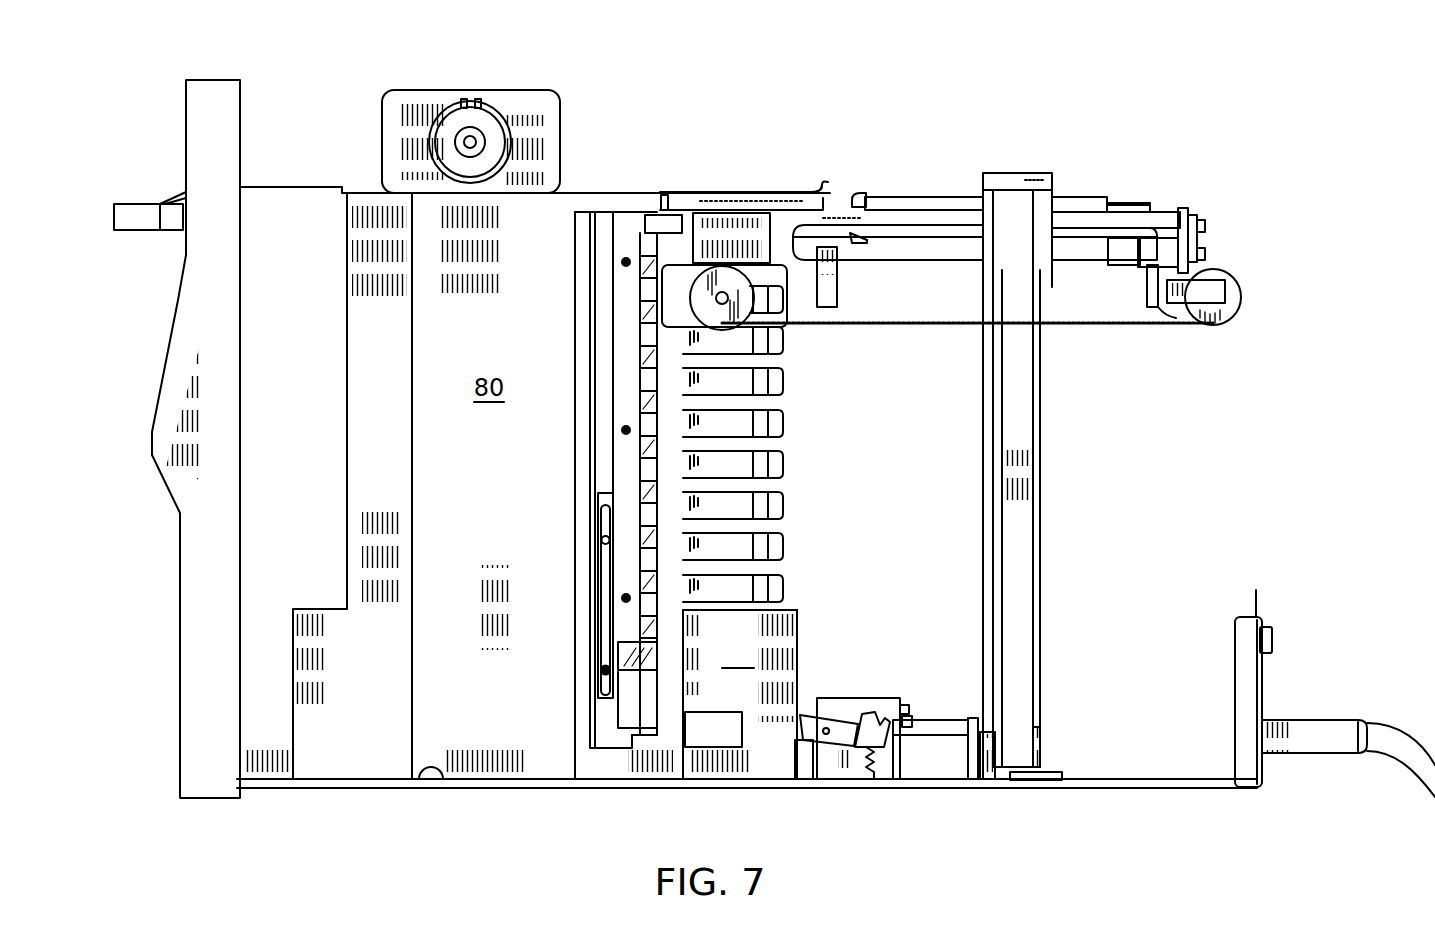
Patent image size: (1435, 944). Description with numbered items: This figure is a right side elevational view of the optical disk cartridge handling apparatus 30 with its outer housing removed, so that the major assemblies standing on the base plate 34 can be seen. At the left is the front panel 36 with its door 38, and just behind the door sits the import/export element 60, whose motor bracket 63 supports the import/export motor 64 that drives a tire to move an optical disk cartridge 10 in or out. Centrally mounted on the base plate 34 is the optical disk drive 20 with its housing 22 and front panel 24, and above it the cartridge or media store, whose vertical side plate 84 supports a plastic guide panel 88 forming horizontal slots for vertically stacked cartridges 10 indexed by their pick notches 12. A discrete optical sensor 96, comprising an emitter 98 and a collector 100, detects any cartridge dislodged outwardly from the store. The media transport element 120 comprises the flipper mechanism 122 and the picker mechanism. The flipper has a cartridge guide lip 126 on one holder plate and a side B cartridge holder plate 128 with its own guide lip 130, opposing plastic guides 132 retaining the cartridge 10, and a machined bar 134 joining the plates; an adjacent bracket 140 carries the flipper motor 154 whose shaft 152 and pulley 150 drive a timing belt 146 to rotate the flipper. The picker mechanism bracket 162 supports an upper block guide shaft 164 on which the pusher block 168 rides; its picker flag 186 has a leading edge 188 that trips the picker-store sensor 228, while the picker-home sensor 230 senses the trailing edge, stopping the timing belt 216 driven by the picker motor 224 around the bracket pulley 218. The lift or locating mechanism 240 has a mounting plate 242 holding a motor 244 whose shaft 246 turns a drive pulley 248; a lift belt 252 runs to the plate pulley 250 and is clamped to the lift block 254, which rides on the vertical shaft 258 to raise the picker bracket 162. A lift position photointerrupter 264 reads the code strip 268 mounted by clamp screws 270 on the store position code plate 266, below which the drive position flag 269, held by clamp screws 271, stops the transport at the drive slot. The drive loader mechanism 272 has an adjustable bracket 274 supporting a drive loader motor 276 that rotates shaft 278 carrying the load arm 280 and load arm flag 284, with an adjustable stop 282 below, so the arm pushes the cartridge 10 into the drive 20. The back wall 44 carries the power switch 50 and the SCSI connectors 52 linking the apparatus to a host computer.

The optical disk cartridge 10 is at (118, 216).
The pick notch 12 is at (765, 548).
The optical disk drive 20 is at (740, 694).
The housing 22 is at (800, 612).
The front panel 24 is at (798, 640).
The optical disk cartridge handling apparatus 30 is at (150, 90).
The base plate 34 is at (435, 786).
The front panel 36 is at (190, 548).
The door 38 is at (182, 193).
The back wall 44 is at (1262, 680).
The power switch 50 is at (1272, 632).
The SCSI plug and connectors 52 is at (1307, 728).
The import/export element 60 is at (292, 190).
The motor bracket 63 is at (530, 105).
The import/export motor 64 is at (478, 124).
The vertical side plate 84 is at (550, 235).
The plastic guide panel 88 is at (642, 752).
The discrete optical sensor 96 is at (820, 185).
The emitter 98 is at (806, 777).
The receiver or collector 100 is at (817, 188).
The media transport element 120 is at (1030, 118).
The flipper mechanism 122 is at (1118, 203).
The cartridge guide lip 126 is at (862, 193).
The side "B" cartridge holder plate 128 is at (930, 240).
The cartridge guide lip 130 is at (852, 232).
The plastic guides 132 is at (1080, 197).
The machined bar 134 is at (1148, 204).
The bracket 140 is at (1186, 212).
The timing belt 146 is at (1198, 218).
The pulley 150 is at (1205, 258).
The shaft 152 is at (1205, 248).
The flipper motor 154 is at (1122, 252).
The picker mechanism bracket 162 is at (705, 225).
The upper block guide shaft 164 is at (937, 225).
The pusher block 168 is at (1133, 283).
The picker flag 186 is at (1145, 305).
The leading or forward edge 188 is at (1150, 300).
The timing belt 216 is at (880, 326).
The bracket pulley 218 is at (1243, 298).
The picker motor 224 is at (740, 300).
The picker-store photointerrupter or optical sensor 228 is at (838, 296).
The picker-home photointerrupter or optical sensor 230 is at (1167, 320).
The lift or locating mechanism 240 is at (1030, 495).
The mounting plate 242 is at (988, 420).
The motor 244 is at (935, 756).
The rotatable shaft 246 is at (996, 745).
The drive pulley 248 is at (1038, 740).
The plate pulley 250 is at (988, 190).
The lift belt 252 is at (1003, 500).
The lift block or bracket 254 is at (1040, 186).
The vertical shaft 258 is at (1040, 630).
The lift position opto or photointerrupter 264 is at (665, 195).
The store position code plate or bracket 266 is at (605, 330).
The lift position photographic process code strip 268 is at (640, 662).
The drive position flag 269 is at (643, 735).
The clamp screws 270 is at (612, 434).
The clamp screws 271 is at (604, 560).
The drive loader mechanism 272 is at (888, 698).
The adjustable bracket 274 is at (905, 704).
The drive loader motor 276 is at (797, 748).
The shaft 278 is at (828, 728).
The load arm 280 is at (865, 730).
The adjustable stop 282 is at (875, 762).
The load arm flag 284 is at (805, 715).